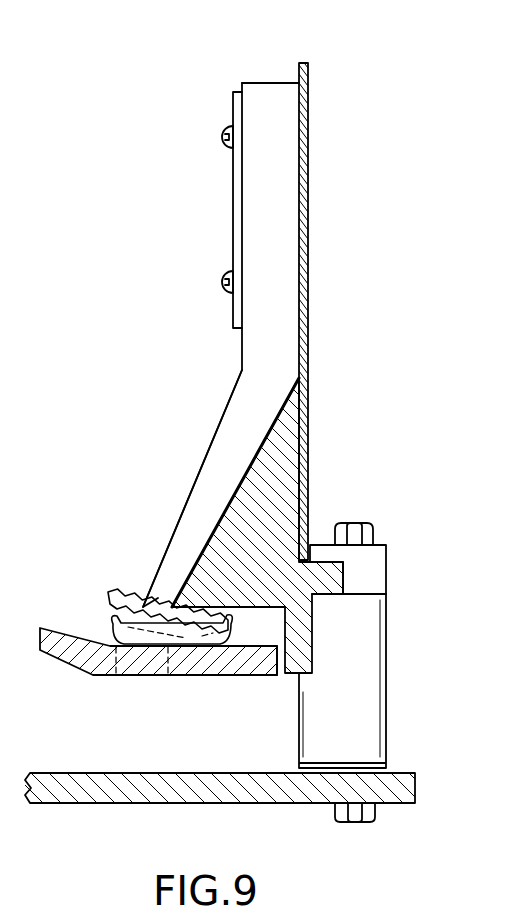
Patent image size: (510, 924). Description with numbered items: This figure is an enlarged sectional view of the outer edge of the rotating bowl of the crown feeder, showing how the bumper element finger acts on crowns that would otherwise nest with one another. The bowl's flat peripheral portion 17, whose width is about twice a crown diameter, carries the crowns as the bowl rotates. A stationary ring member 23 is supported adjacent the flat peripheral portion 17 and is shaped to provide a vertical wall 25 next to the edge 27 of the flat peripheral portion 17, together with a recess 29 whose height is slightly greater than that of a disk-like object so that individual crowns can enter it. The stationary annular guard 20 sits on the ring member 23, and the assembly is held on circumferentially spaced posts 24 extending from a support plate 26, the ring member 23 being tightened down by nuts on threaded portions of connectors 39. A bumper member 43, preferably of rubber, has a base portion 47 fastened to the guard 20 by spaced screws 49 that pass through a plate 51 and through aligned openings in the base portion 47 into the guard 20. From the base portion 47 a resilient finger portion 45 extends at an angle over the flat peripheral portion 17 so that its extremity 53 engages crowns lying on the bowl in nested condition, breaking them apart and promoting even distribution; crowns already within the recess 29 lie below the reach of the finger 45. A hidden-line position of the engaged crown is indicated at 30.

The flat peripheral portion 17 is at (183, 677).
The stationary annular guard 20 is at (308, 327).
The stationary ring member 23 is at (278, 478).
The posts 24 is at (370, 683).
The vertical wall 25 is at (318, 660).
The support plate 26 is at (218, 796).
The edge 27 is at (271, 670).
The recess 29 is at (243, 627).
The hidden tooth line 30 is at (168, 646).
The connectors 39 is at (372, 556).
The bumper member 43 is at (265, 87).
The resilient finger portion 45 is at (194, 496).
The base portion 47 is at (276, 200).
The screws 49 is at (221, 128).
The plate 51 is at (236, 215).
The extremity 53 is at (118, 588).